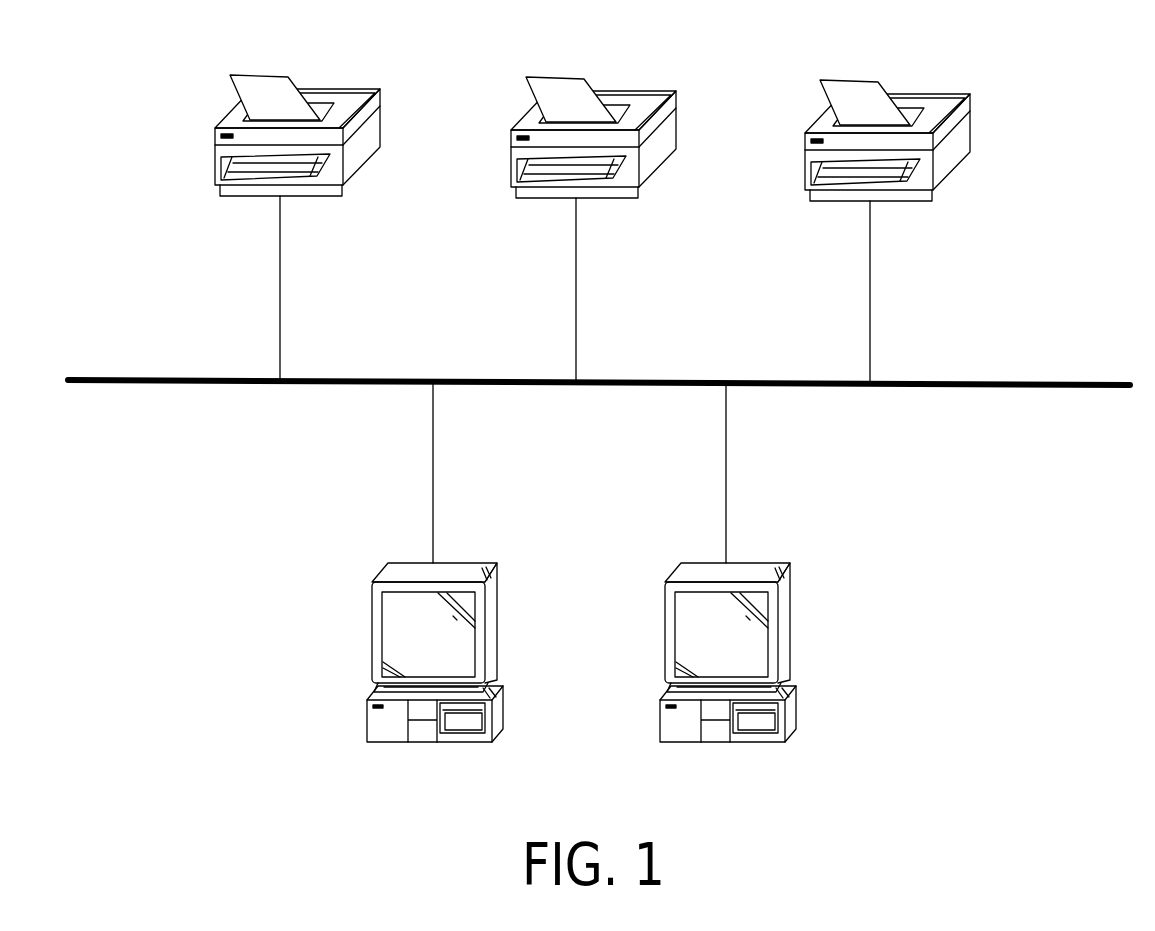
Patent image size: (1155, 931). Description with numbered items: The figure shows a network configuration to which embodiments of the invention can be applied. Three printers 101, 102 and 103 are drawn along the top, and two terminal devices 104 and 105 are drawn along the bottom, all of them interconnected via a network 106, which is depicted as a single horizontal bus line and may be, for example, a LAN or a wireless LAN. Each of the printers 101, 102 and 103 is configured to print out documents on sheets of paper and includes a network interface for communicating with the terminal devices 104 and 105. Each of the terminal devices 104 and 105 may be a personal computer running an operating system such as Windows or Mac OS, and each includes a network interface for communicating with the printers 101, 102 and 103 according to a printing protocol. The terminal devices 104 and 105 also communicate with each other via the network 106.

The printer 101 is at (343, 86).
The printer 102 is at (639, 88).
The printer 103 is at (934, 93).
The terminal device 104 is at (373, 635).
The terminal device 105 is at (666, 635).
The network 106 is at (1007, 388).